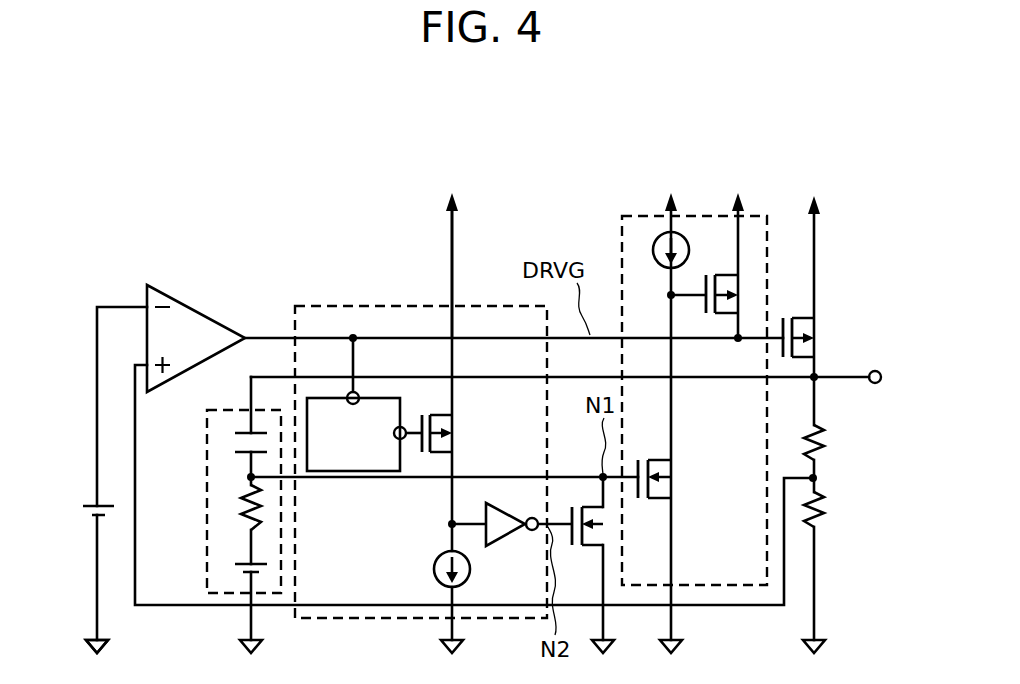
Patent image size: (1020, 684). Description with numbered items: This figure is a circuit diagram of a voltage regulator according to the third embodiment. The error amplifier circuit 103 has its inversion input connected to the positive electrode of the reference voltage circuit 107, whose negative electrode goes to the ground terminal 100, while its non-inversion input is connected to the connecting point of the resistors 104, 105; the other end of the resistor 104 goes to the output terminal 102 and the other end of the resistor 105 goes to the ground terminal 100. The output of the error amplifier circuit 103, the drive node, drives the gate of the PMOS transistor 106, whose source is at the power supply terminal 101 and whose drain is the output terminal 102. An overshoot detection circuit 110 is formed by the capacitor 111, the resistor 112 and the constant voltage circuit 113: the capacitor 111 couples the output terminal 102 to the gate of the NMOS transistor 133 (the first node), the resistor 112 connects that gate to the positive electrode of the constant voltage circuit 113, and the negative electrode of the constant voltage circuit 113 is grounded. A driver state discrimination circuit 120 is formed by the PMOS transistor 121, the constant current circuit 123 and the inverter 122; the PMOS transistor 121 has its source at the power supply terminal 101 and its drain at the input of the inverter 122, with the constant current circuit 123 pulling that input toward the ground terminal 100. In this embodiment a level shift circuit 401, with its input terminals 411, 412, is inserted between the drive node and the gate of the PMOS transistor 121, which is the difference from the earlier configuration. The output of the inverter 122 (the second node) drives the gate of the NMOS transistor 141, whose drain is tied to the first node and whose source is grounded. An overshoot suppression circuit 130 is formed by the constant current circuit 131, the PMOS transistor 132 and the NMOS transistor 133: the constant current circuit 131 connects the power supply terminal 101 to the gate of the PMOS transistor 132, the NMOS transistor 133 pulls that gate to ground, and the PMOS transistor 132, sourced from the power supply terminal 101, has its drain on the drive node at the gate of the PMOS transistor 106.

The ground terminal 100 is at (90, 636).
The power supply terminal 101 is at (445, 202).
The output terminal 102 is at (875, 370).
The error amplifier circuit 103 is at (148, 283).
The resistor 104 is at (825, 443).
The resistor 105 is at (825, 508).
The PMOS transistor 106 is at (818, 326).
The reference voltage circuit 107 is at (93, 504).
The overshoot detection circuit 110 is at (222, 597).
The capacitor 111 is at (234, 440).
The resistor 112 is at (234, 507).
The constant voltage circuit 113 is at (234, 563).
The driver state discrimination circuit 120 is at (390, 306).
The PMOS transistor 121 is at (446, 433).
The inverter 122 is at (500, 540).
The constant current circuit 123 is at (440, 585).
The overshoot suppression circuit 130 is at (742, 585).
The constant current circuit 131 is at (690, 240).
The PMOS transistor 132 is at (728, 315).
The NMOS transistor 133 is at (672, 488).
The NMOS transistor 141 is at (585, 505).
The level shift circuit 401 is at (335, 458).
The input terminal 411 is at (362, 394).
The input terminal 412 is at (403, 442).